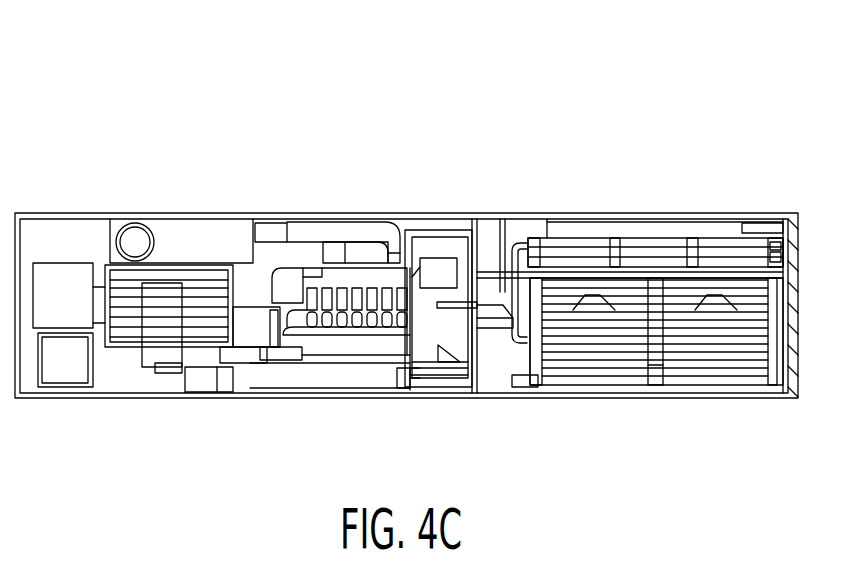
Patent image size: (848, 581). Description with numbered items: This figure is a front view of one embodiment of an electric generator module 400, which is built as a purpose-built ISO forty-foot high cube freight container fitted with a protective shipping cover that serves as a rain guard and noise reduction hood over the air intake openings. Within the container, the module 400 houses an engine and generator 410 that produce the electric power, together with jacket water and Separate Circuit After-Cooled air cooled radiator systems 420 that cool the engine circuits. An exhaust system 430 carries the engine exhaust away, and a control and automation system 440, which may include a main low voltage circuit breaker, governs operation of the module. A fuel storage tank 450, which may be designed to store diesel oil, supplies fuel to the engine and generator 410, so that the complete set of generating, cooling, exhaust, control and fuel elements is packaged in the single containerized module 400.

The electric generator module 400 is at (604, 100).
The engine and generator 410 is at (348, 332).
The jacket water and Separate Circuit After-Cooled (SCAC) air cooled radiator system 420 is at (672, 234).
The exhaust system 430 is at (195, 236).
The control and automation system 440 is at (63, 284).
The fuel storage tank 450 is at (620, 366).